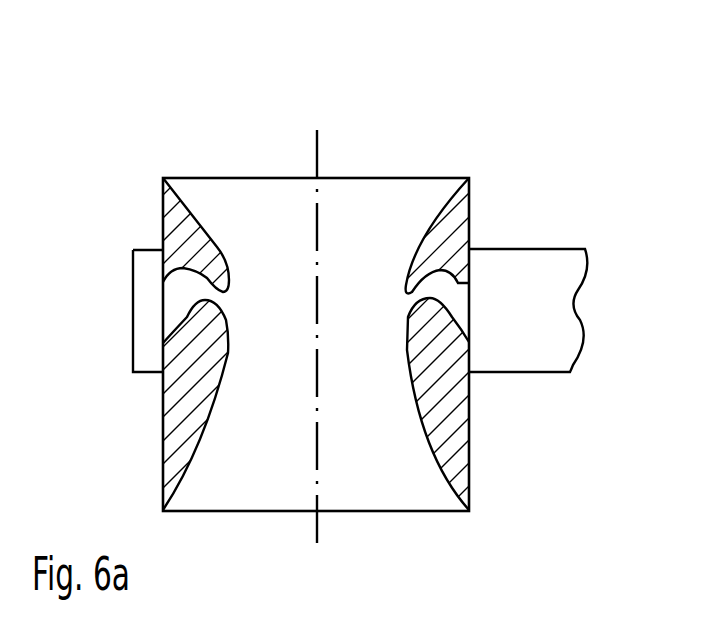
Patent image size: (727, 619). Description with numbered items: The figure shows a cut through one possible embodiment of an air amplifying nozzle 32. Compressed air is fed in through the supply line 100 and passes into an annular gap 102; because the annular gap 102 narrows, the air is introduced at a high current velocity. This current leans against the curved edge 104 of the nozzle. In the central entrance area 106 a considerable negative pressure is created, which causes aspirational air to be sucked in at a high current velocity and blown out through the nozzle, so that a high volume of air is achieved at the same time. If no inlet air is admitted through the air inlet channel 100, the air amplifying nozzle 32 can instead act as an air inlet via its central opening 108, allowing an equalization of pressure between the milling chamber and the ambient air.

The air amplifying nozzle 32 is at (520, 190).
The supply line 100 is at (557, 265).
The annular gap 102 is at (412, 301).
The curved edge 104 is at (231, 344).
The central entrance area 106 is at (373, 133).
The central opening 108 is at (378, 468).